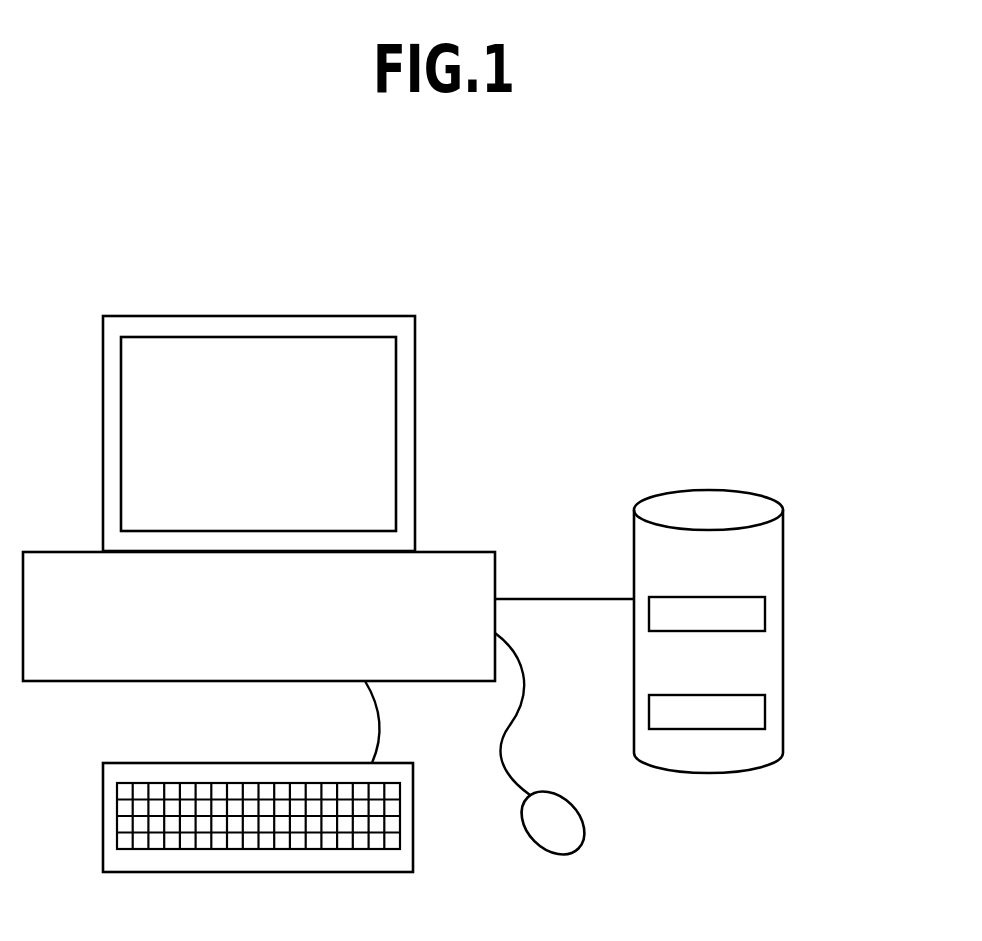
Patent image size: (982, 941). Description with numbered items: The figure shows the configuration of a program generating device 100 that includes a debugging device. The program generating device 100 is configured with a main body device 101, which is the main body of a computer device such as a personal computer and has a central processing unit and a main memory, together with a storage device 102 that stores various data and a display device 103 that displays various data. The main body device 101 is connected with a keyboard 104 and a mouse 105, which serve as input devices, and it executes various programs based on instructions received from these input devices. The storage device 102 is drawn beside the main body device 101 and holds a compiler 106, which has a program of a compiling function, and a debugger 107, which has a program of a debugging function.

The program generating device 100 is at (539, 344).
The main body device 101 is at (495, 577).
The storage device 102 is at (783, 543).
The display device 103 is at (415, 435).
The keyboard 104 is at (413, 852).
The mouse 105 is at (583, 832).
The compiler 106 is at (706, 597).
The debugger 107 is at (706, 695).